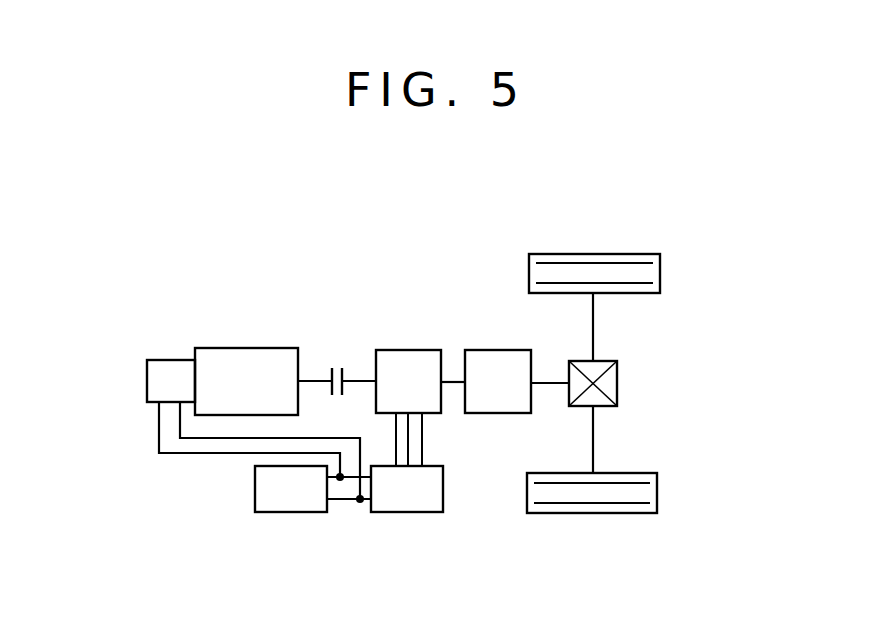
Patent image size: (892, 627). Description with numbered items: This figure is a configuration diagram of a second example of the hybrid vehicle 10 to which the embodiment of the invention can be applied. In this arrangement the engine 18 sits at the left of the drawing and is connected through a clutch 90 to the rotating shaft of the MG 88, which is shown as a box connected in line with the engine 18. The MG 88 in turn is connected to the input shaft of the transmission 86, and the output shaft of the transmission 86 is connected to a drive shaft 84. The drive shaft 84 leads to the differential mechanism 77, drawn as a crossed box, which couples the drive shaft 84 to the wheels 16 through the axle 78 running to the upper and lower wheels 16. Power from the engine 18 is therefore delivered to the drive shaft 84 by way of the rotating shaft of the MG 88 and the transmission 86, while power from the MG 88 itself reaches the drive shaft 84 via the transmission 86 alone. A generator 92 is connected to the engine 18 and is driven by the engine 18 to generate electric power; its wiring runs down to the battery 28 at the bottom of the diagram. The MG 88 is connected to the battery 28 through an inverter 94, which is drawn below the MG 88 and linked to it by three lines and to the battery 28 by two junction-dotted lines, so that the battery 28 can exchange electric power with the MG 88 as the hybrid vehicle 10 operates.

The hybrid vehicle 10 is at (416, 262).
The wheels 16 is at (661, 273).
The engine 18 is at (247, 348).
The battery 28 is at (292, 512).
The differential mechanism 77 is at (618, 385).
The axle 78 is at (594, 323).
The drive shaft 84 is at (553, 383).
The transmission 86 is at (495, 350).
The MG 88 is at (409, 350).
The clutch 90 is at (335, 368).
The generator 92 is at (170, 360).
The inverter 94 is at (407, 512).